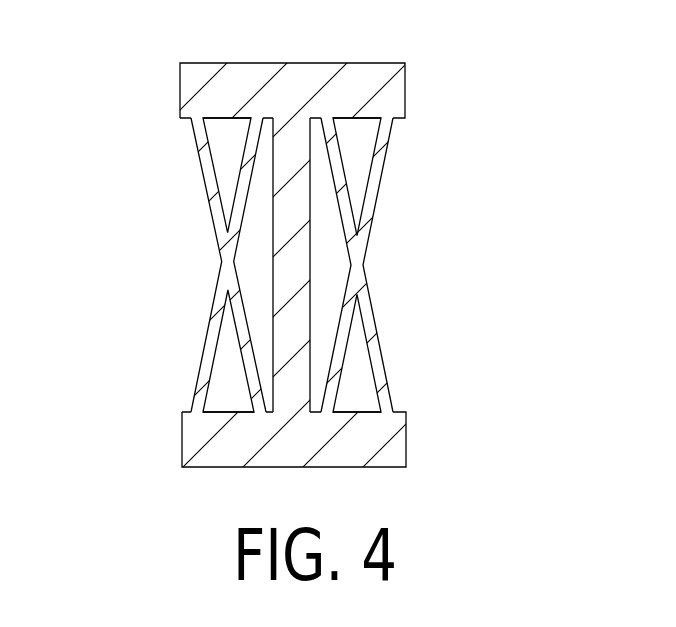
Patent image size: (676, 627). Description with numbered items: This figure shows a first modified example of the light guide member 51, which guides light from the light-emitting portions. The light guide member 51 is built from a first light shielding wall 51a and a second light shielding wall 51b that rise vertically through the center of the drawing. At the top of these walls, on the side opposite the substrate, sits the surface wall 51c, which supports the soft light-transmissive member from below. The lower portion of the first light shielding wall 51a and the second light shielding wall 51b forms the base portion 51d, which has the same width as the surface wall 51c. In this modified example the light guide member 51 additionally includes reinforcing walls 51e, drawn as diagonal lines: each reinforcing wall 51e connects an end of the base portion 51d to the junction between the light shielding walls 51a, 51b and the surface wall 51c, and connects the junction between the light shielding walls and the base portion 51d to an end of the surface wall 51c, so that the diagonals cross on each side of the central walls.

The light guide member 51 is at (338, 253).
The first light shielding wall 51a is at (438, 265).
The second light shielding wall 51b is at (295, 258).
The surface wall 51c is at (390, 93).
The base portion 51d is at (390, 441).
The reinforcing walls 51e is at (213, 185).